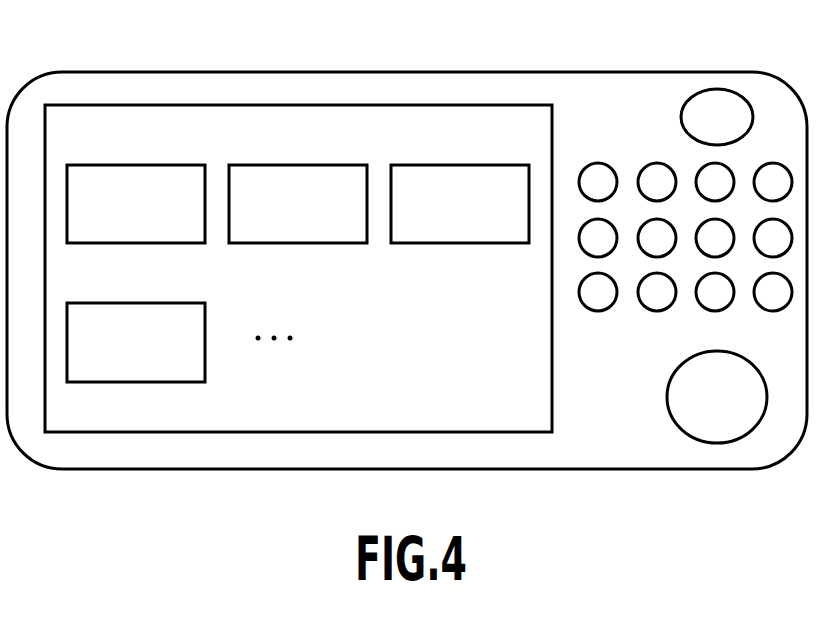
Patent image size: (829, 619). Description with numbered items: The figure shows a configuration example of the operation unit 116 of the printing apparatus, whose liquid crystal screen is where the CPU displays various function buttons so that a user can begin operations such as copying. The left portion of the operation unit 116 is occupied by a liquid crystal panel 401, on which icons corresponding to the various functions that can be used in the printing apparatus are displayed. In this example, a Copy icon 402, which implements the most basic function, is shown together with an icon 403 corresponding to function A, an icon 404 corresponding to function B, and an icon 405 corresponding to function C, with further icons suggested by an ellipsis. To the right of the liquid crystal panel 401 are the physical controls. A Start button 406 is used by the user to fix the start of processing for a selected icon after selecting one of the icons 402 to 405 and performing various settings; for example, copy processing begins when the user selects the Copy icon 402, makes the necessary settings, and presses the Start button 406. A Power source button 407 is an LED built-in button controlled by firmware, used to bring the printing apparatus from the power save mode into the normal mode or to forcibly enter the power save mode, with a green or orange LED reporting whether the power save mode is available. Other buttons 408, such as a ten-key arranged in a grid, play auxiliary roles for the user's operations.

The operation unit 116 is at (428, 72).
The liquid crystal panel 401 is at (553, 128).
The Copy icon 402 is at (117, 165).
The icon corresponding to function A 403 is at (283, 165).
The icon corresponding to function B 404 is at (440, 165).
The icon corresponding to function C 405 is at (117, 303).
The Start button 406 is at (766, 377).
The Power source button 407 is at (714, 89).
The other buttons 408 is at (771, 163).